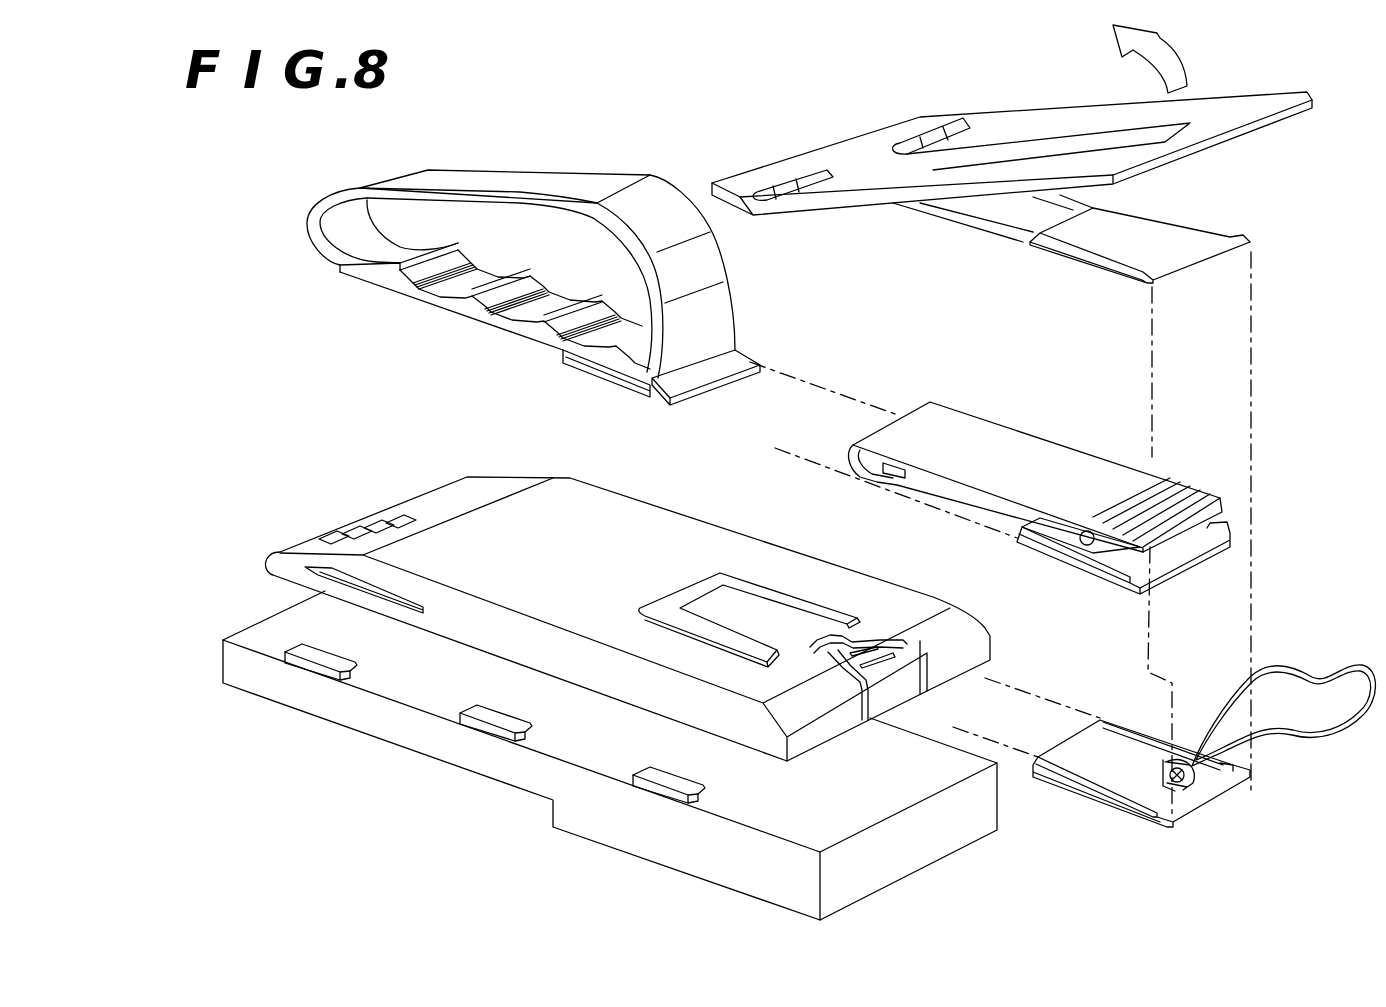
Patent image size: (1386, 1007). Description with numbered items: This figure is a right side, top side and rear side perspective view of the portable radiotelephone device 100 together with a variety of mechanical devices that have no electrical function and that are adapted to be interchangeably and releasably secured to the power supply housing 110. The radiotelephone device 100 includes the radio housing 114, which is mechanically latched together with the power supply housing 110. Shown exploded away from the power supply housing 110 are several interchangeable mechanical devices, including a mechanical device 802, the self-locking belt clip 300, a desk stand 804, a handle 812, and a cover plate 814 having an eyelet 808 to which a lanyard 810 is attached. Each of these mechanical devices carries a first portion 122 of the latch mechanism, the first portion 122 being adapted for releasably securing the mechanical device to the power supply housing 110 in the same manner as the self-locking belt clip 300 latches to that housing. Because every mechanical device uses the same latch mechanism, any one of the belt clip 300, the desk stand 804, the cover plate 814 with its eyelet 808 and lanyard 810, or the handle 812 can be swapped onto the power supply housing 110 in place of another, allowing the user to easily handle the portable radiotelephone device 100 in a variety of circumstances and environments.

The portable radiotelephone device 100 is at (548, 91).
The power supply housing 110 is at (602, 497).
The radio housing 114 is at (584, 835).
The first portion of latch mechanism 122 is at (612, 379).
The self-locking belt clip 300 is at (1020, 431).
The mechanical device 802 is at (512, 318).
The desk stand 804 is at (865, 145).
The eyelet 808 is at (1193, 783).
The lanyard 810 is at (1333, 739).
The handle 812 is at (612, 168).
The cover plate 814 is at (683, 582).